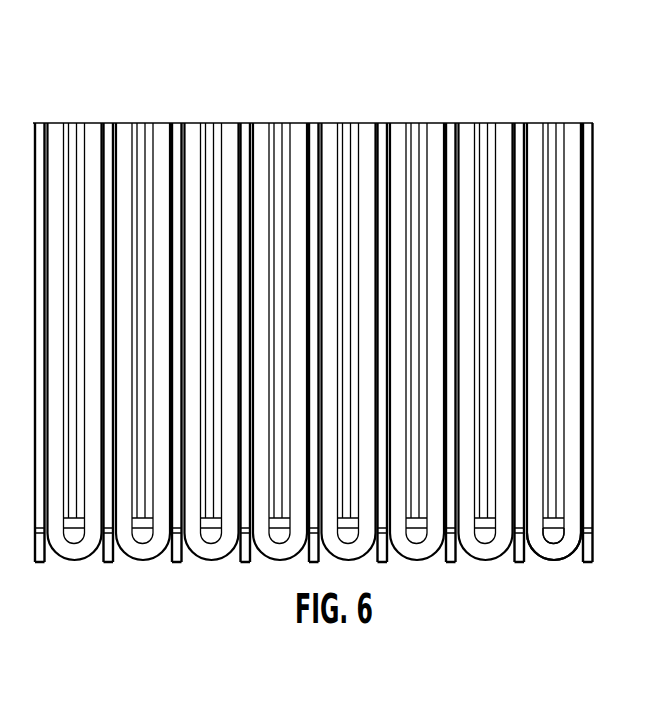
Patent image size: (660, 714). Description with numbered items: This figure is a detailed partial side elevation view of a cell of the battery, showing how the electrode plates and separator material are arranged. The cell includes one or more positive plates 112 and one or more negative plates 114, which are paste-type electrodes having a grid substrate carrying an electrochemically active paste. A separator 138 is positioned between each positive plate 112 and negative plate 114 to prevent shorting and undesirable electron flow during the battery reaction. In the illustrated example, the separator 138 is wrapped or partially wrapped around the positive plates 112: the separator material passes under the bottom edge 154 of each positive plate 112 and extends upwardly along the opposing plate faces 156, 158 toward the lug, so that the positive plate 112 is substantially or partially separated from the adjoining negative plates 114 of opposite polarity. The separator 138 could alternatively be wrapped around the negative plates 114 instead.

The positive plate 112 is at (547, 282).
The negative plate 114 is at (590, 343).
The separator 138 is at (498, 193).
The bottom edge 154 is at (550, 537).
The opposing face 156 is at (560, 457).
The opposing face 158 is at (560, 457).